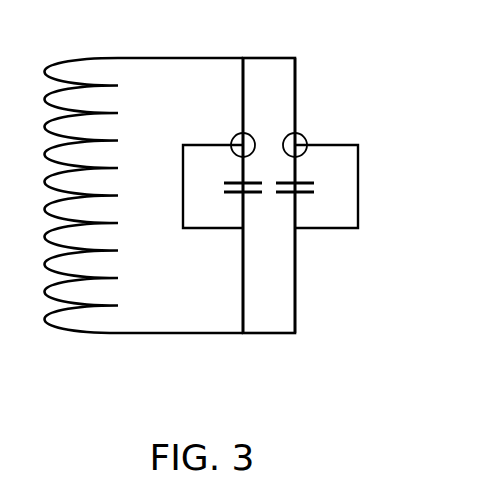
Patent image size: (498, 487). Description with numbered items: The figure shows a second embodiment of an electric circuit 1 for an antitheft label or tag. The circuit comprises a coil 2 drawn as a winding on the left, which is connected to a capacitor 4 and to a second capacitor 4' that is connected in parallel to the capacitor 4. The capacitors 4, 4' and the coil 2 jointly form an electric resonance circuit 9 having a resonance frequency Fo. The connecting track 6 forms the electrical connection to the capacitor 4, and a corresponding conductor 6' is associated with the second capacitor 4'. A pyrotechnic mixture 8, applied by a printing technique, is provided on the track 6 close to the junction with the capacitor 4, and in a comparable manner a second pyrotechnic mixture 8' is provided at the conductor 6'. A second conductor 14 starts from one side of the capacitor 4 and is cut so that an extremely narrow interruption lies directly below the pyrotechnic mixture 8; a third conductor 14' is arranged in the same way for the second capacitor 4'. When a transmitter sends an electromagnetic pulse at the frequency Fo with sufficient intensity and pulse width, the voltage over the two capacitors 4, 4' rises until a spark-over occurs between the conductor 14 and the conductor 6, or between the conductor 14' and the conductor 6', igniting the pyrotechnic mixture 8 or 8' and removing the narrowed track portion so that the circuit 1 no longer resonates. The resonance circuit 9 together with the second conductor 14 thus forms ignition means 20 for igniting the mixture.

The electric circuit 1 is at (397, 382).
The coil 2 is at (119, 113).
The capacitor 4 is at (197, 241).
The second capacitor 4' is at (324, 240).
The connecting track 6 is at (223, 175).
The conductor 6' is at (354, 173).
The pyrotechnic mixture 8 is at (230, 119).
The second pyrotechnic mixture 8' is at (329, 118).
The electric resonance circuit 9 is at (152, 312).
The second conductor 14 is at (210, 222).
The third conductor 14' is at (379, 202).
The ignition means 20 is at (262, 317).